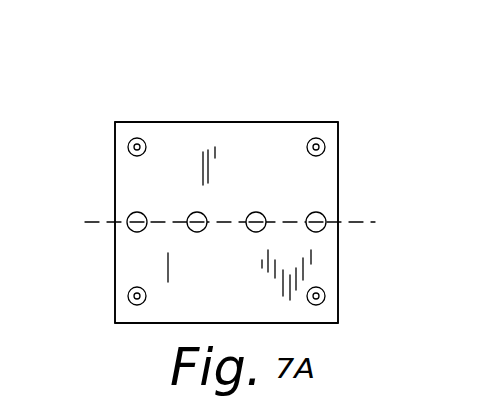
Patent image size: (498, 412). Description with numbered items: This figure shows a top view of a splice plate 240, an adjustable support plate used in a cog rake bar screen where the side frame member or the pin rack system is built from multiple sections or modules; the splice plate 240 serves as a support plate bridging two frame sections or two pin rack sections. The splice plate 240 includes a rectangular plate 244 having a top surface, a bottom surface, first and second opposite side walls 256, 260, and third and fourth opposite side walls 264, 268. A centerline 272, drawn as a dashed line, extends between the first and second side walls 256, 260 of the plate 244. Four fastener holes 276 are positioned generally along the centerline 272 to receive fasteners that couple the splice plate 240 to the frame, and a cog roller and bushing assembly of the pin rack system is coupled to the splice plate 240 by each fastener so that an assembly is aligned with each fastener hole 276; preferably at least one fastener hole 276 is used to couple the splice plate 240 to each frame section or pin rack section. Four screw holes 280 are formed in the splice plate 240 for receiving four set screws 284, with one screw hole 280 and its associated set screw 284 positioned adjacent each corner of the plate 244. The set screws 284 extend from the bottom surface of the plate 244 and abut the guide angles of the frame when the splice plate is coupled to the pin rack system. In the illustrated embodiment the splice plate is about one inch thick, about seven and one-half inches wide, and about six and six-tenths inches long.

The splice plate 240 is at (104, 112).
The rectangular plate 244 is at (250, 136).
The first side wall 256 is at (340, 141).
The second side wall 260 is at (115, 243).
The third side wall 264 is at (288, 121).
The fourth side wall 268 is at (148, 324).
The centerline 272 is at (348, 222).
The fastener holes 276 is at (160, 187).
The screw holes 280 is at (168, 101).
The set screws 284 is at (128, 147).